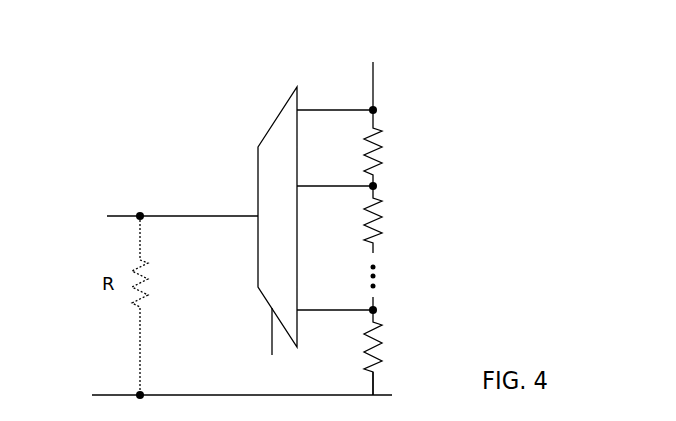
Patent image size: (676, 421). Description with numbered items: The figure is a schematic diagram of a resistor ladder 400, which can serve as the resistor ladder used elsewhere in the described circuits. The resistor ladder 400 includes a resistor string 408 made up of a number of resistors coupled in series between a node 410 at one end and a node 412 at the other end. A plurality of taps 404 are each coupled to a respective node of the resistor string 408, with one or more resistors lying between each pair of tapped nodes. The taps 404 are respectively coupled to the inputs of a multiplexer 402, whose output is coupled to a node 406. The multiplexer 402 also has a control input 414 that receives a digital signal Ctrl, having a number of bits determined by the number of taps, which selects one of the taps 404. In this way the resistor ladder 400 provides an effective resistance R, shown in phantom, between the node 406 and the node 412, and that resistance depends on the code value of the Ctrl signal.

The resistor ladder 400 is at (184, 90).
The multiplexer 402 is at (287, 108).
The taps 404 is at (326, 308).
The node 406 is at (224, 215).
The resistor string 408 is at (379, 128).
The node 410 is at (373, 63).
The node 412 is at (375, 378).
The control input 414 is at (271, 322).